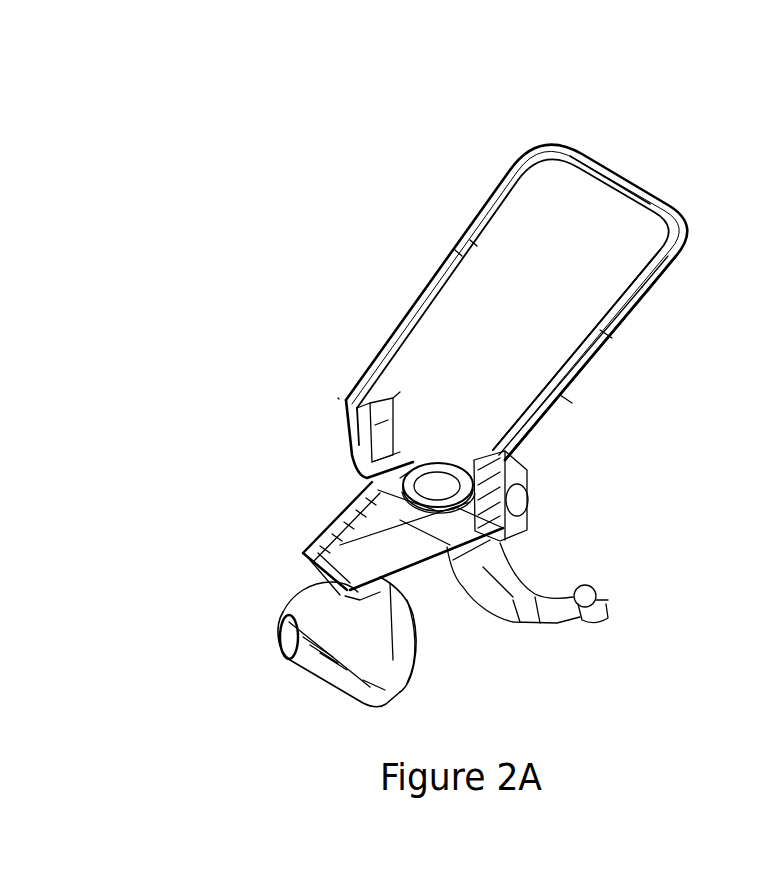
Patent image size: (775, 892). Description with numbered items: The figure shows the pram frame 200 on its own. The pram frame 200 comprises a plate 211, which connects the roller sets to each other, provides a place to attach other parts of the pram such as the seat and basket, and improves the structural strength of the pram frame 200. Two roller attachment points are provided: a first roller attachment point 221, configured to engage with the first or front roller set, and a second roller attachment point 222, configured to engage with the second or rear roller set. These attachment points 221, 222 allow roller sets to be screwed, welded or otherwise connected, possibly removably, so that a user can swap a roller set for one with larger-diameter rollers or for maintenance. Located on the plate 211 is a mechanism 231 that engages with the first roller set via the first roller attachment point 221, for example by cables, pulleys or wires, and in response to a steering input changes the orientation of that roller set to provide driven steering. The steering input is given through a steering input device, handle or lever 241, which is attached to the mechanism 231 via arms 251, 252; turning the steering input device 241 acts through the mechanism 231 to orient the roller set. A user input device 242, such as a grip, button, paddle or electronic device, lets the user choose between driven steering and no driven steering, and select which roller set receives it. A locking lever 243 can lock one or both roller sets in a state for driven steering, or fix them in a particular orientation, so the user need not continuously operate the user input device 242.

The pram frame 200 is at (338, 398).
The plate 211 is at (340, 512).
The first roller attachment point 221 is at (283, 617).
The second roller attachment point 222 is at (585, 585).
The mechanism 231 is at (457, 484).
The steering input device 241 is at (657, 263).
The user input device 242 is at (651, 192).
The locking lever 243 is at (620, 170).
The arm 251 is at (593, 370).
The arm 252 is at (413, 318).